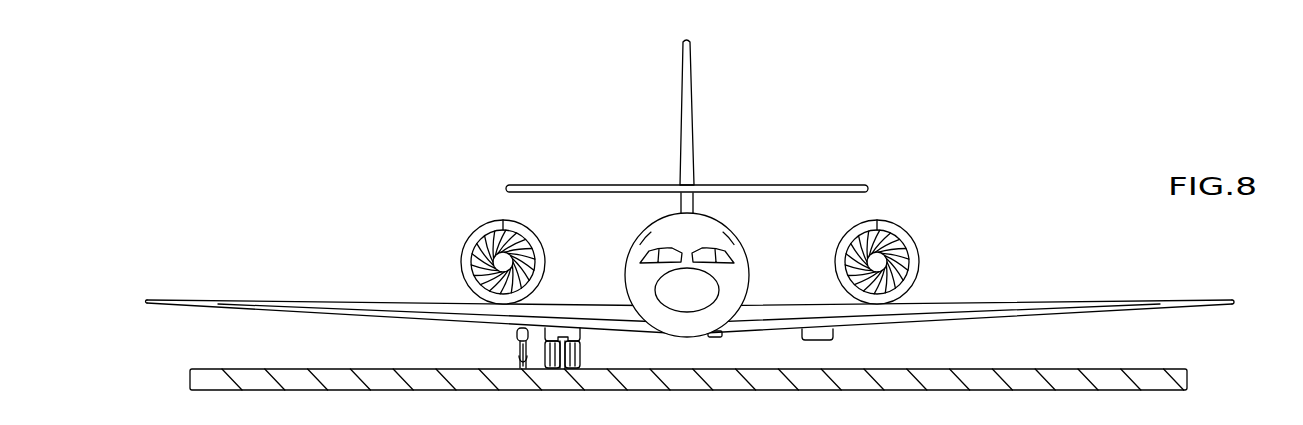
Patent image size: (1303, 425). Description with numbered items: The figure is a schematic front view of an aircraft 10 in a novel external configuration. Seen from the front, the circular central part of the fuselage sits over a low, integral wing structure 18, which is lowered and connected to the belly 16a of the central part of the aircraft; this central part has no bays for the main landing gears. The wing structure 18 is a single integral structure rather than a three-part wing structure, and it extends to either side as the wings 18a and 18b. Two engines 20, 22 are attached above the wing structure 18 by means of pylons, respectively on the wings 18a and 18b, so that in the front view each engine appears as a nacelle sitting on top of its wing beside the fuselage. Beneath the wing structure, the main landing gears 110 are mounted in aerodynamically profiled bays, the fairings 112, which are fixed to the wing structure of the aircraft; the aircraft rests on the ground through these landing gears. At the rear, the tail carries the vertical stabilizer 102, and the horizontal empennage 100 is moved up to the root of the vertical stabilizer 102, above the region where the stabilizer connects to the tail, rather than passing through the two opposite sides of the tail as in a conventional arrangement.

The aircraft 10 is at (1090, 277).
The belly of the central part 16a is at (690, 340).
The wing structure 18 is at (709, 319).
The wing 18a is at (1213, 299).
The wing 18b is at (298, 298).
The engine 20 is at (918, 252).
The engine 22 is at (473, 228).
The horizontal empennage 100 is at (797, 183).
The vertical stabilizer 102 is at (697, 115).
The main landing gear 110 is at (548, 371).
The fairing 112 is at (580, 338).